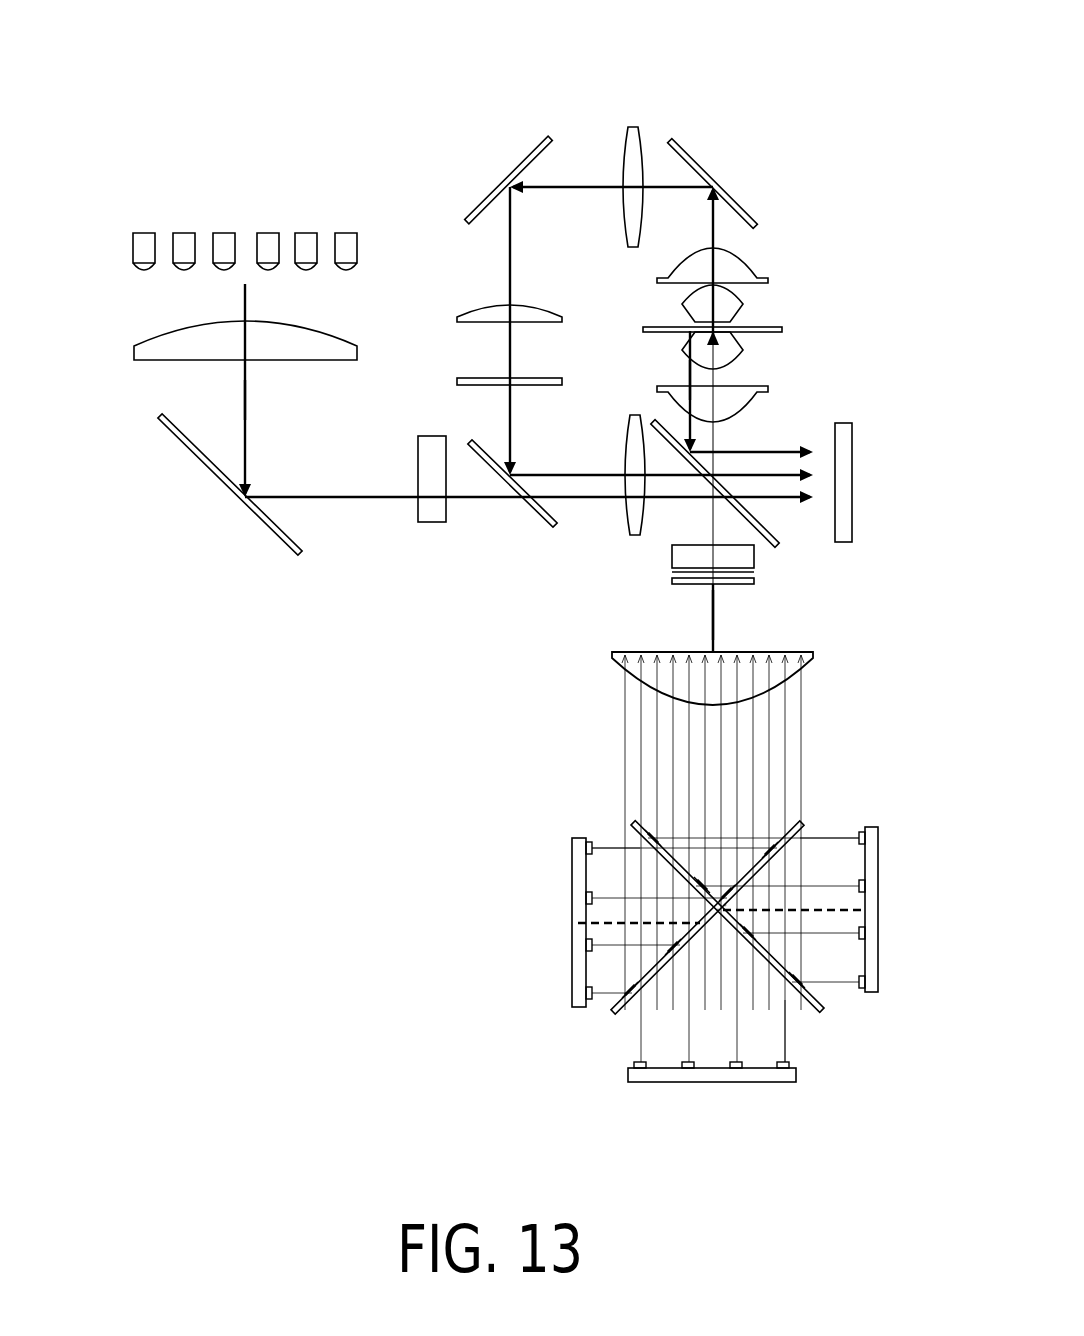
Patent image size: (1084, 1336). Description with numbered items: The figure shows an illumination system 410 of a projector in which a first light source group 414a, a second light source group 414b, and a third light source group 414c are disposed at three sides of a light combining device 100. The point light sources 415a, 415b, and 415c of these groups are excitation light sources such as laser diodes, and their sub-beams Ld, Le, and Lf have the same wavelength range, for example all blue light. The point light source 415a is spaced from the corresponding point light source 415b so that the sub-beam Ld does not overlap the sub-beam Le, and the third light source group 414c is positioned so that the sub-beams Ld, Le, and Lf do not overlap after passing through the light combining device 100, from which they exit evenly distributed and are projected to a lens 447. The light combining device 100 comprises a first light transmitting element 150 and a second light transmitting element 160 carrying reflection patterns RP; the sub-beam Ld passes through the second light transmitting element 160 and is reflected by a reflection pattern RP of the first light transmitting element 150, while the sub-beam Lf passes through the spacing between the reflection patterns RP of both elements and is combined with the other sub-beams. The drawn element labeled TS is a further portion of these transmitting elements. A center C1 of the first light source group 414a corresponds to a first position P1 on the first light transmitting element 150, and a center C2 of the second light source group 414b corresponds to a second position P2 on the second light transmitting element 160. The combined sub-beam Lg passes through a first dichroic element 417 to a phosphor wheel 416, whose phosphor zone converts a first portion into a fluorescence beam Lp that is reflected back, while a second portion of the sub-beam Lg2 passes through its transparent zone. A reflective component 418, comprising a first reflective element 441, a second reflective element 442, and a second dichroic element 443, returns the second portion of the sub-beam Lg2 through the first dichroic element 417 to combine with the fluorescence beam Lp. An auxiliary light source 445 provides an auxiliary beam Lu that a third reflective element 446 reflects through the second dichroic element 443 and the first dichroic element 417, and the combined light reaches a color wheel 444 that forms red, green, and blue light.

The illumination system 410 is at (503, 585).
The reflective component 418 is at (592, 263).
The first reflective element 441 is at (672, 138).
The second reflective element 442 is at (467, 215).
The second dichroic element 443 is at (468, 438).
The color wheel 444 is at (853, 508).
The auxiliary light source 445 is at (123, 236).
The third reflective element 446 is at (198, 462).
The phosphor wheel 416 is at (768, 326).
The first dichroic element 417 is at (777, 546).
The lens 447 is at (813, 655).
The light combining device 100 is at (715, 962).
The first light transmitting element 150 is at (560, 1050).
The second light transmitting element 160 is at (888, 1005).
The first light source group 414a is at (578, 878).
The second light source group 414b is at (878, 958).
The third light source group 414c is at (692, 1083).
The point light source 415a is at (586, 848).
The point light source 415b is at (876, 838).
The point light source 415c is at (640, 1085).
The reflection pattern RP is at (620, 1012).
The transparent substrate TS is at (628, 1018).
The first position P1 is at (705, 925).
The second position P2 is at (730, 898).
The center of the first light source group C1 is at (578, 923).
The center of the second light source group C2 is at (878, 912).
The auxiliary beam Lu is at (245, 400).
The fluorescence beam Lp is at (688, 377).
The sub-beam Lg is at (715, 605).
The second portion of the sub-beam Lg2 is at (742, 245).
The sub-beam Ld is at (606, 850).
The sub-beam Le is at (840, 838).
The sub-beam Lf is at (785, 1035).